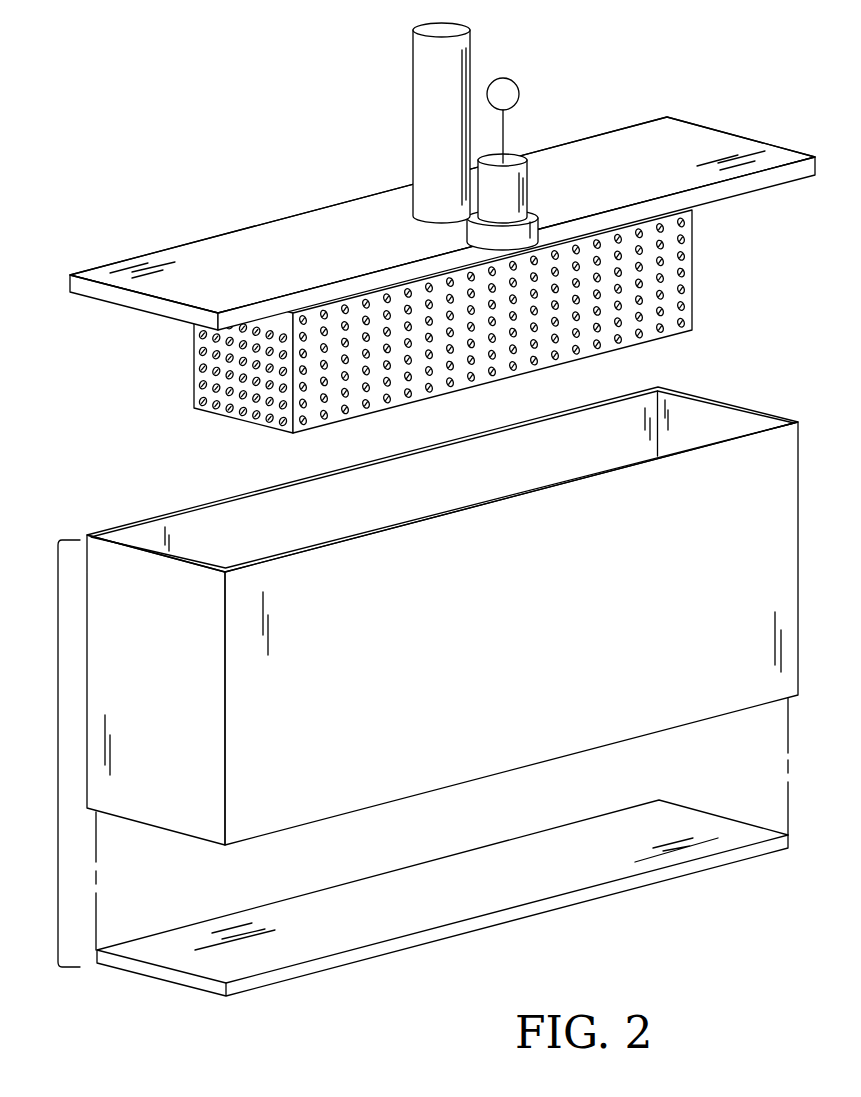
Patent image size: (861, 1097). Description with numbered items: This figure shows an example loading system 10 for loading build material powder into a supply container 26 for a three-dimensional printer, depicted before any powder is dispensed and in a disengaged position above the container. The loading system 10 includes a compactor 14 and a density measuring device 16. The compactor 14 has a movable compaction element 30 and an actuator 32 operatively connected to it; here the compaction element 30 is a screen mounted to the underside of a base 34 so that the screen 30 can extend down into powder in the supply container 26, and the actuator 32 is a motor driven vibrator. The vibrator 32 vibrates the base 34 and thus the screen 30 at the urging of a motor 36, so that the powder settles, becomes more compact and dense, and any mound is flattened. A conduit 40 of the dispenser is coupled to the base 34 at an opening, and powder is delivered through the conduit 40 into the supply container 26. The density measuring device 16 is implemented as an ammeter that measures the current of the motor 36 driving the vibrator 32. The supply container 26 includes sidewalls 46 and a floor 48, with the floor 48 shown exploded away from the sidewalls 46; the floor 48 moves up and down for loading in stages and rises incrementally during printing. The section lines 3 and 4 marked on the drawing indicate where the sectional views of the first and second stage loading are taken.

The loading system 10 is at (592, 97).
The compactor 14 is at (575, 208).
The density measuring device 16 is at (508, 82).
The supply container 26 is at (58, 753).
The compaction element 30 is at (193, 382).
The actuator 32 is at (477, 230).
The base 34 is at (247, 253).
The motor 36 is at (526, 178).
The conduit 40 is at (430, 112).
The sidewalls 46 is at (757, 414).
The floor 48 is at (576, 898).
The section line 3- 3 is at (818, 125).
The section line 4- 4 is at (273, 180).